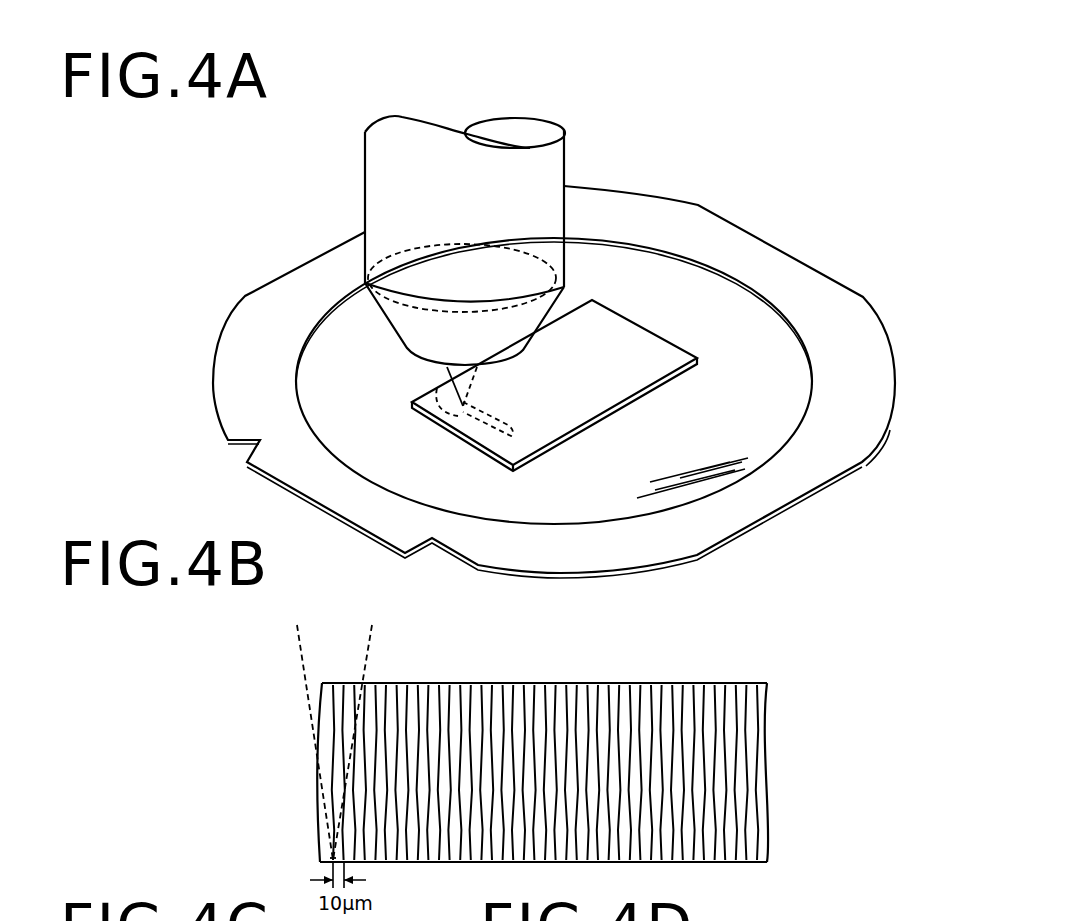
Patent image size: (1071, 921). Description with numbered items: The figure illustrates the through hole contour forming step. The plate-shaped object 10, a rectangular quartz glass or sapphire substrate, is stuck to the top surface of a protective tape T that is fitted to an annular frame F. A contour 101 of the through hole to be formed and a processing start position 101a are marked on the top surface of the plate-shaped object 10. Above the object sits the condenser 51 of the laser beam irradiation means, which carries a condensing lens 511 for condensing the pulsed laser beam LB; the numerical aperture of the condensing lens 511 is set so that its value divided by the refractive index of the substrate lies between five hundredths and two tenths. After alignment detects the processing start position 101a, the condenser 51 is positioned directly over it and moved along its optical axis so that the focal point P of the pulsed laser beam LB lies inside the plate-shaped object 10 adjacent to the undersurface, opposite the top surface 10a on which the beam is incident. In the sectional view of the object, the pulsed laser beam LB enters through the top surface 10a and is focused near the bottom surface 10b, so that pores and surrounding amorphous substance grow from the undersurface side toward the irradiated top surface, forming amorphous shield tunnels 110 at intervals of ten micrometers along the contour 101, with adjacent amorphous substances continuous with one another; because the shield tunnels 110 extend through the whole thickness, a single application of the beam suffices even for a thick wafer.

In FIG. 4A, the condenser 51 is at (550, 163).
In FIG. 4A, the condensing lens 511 is at (397, 253).
In FIG. 4A, the plate-shaped object 10 is at (627, 313).
In FIG. 4B, the plate-shaped object 10 is at (611, 683).
In FIG. 4A, the protective tape T is at (753, 333).
In FIG. 4A, the annular frame F is at (857, 345).
In FIG. 4A, the pulsed laser beam LB is at (437, 388).
In FIG. 4B, the pulsed laser beam LB is at (375, 640).
In FIG. 4A, the contour of through hole to be formed 101 is at (513, 433).
In FIG. 4A, the processing start position 101a is at (436, 416).
In FIG. 4B, the shield tunnels 110 is at (488, 700).
In FIG. 4B, the front surface of wafer 10a is at (528, 683).
In FIG. 4B, the back surface of wafer 10b is at (415, 865).
In FIG. 4B, the focal point P is at (330, 858).